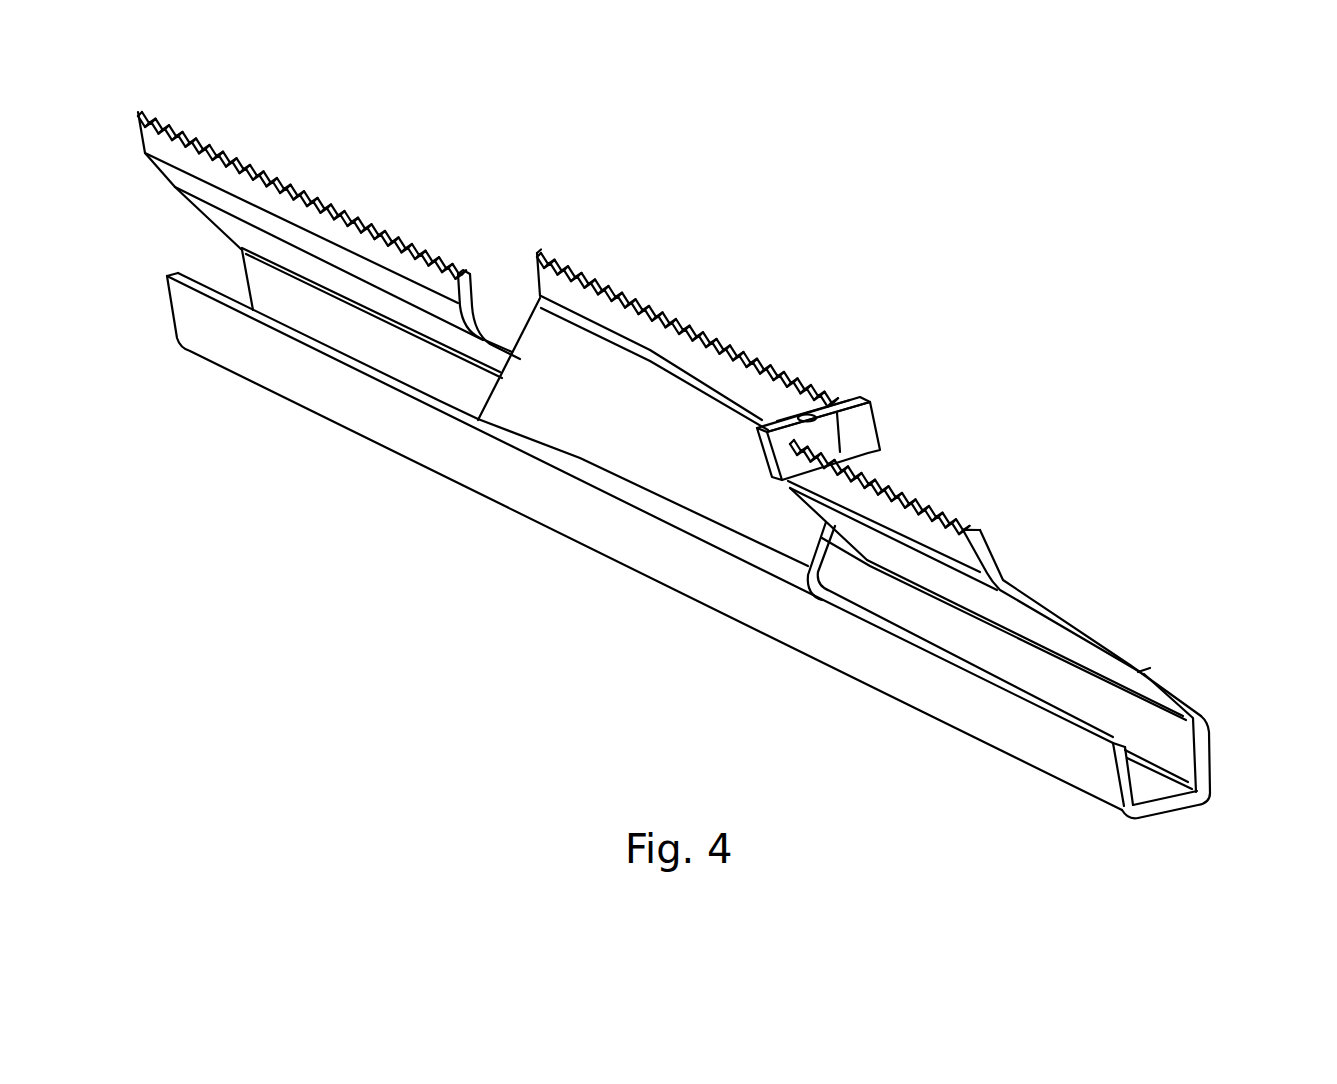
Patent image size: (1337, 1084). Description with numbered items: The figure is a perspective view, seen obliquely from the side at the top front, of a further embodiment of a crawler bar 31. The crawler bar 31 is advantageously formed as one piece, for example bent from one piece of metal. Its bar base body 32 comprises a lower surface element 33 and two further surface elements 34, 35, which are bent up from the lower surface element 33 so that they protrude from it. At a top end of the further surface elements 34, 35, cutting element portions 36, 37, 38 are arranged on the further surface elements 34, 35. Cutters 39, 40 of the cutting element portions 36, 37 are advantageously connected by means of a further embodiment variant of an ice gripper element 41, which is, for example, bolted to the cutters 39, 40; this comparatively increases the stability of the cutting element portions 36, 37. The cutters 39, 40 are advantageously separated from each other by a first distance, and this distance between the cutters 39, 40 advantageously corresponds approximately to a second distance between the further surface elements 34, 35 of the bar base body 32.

The crawler bar 31 is at (1062, 354).
The bar base body 32 is at (998, 776).
The lower surface element 33 is at (1176, 805).
The further surface element 34 is at (1125, 792).
The further surface element 35 is at (1203, 749).
The cutting element portion 36 is at (1018, 574).
The cutting element portion 37 is at (775, 338).
The cutting element portion 38 is at (425, 212).
The cutter 39 is at (925, 472).
The cutter 40 is at (660, 336).
The ice gripper element 41 is at (862, 418).